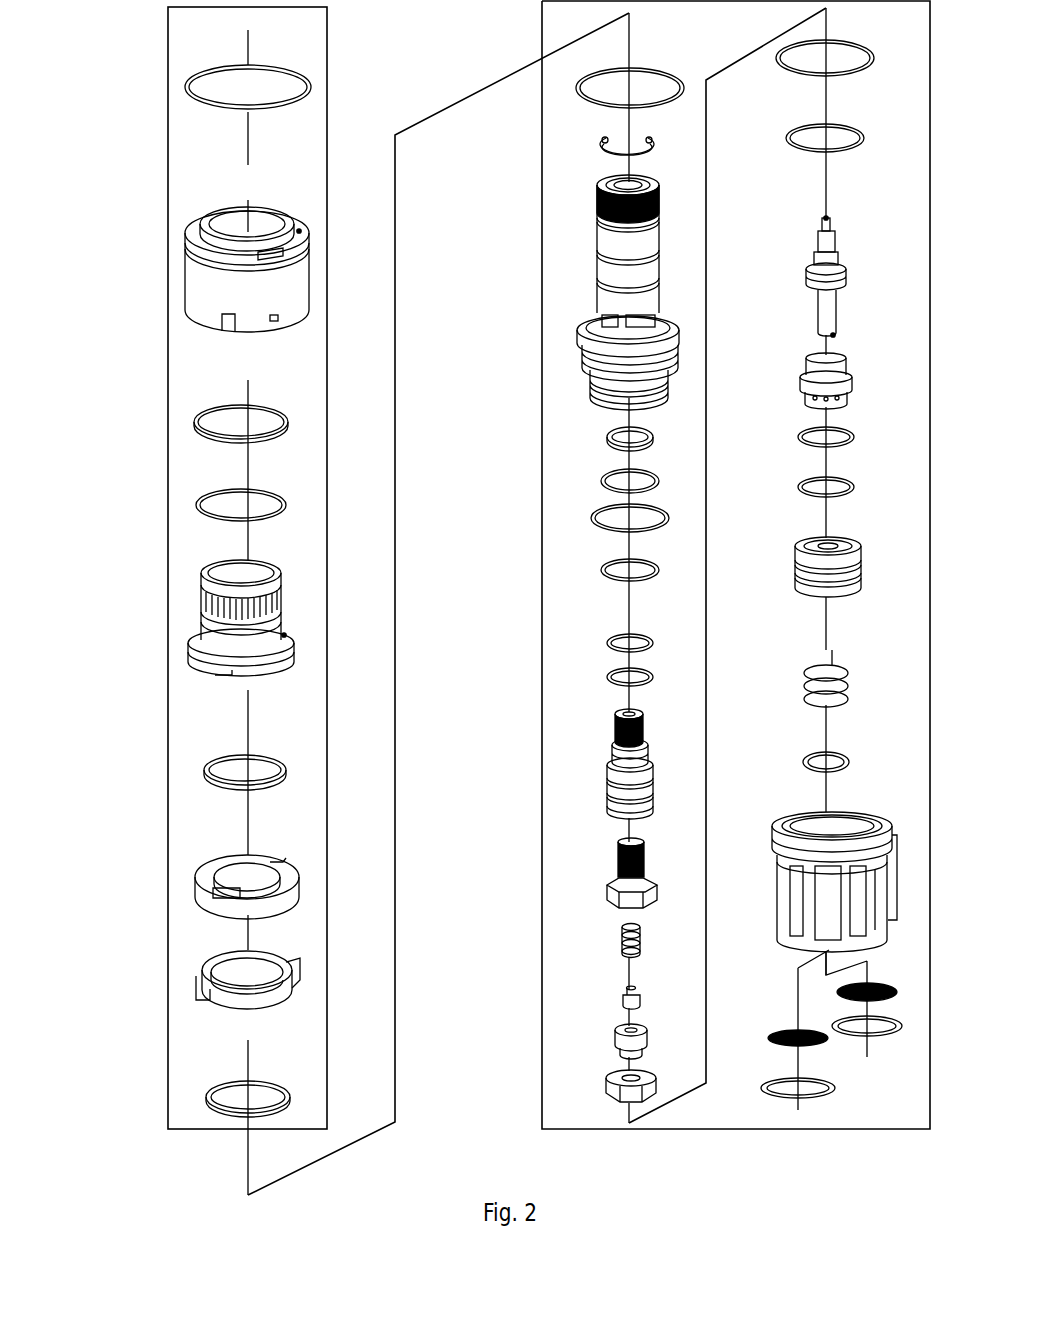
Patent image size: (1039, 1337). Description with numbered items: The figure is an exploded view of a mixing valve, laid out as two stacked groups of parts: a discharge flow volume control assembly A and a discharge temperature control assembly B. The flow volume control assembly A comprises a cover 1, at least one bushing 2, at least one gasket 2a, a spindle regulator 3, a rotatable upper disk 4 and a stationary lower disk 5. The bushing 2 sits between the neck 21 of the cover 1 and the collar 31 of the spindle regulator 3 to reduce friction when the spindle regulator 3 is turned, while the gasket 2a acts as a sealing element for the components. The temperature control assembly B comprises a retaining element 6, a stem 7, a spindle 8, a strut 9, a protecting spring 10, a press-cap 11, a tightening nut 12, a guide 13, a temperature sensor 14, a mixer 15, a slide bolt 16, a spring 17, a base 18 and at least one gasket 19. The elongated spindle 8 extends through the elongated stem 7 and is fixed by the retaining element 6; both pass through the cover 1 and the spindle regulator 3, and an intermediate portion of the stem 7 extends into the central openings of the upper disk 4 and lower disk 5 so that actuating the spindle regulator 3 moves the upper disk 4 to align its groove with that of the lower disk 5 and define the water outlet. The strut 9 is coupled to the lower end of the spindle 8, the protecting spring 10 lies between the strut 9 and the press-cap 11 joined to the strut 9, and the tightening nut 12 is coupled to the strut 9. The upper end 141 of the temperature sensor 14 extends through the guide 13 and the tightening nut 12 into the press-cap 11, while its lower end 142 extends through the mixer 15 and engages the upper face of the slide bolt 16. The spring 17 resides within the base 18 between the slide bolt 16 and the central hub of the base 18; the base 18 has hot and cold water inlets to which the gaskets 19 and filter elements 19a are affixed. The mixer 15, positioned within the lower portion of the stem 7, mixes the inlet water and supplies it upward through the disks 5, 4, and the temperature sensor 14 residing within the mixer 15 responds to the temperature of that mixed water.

The cover 1 is at (187, 275).
The neck 21 is at (301, 229).
The bushing 2 is at (196, 428).
The gasket 2a is at (206, 778).
The spindle regulator 3 is at (200, 620).
The collar 31 is at (285, 634).
The upper disk 4 is at (196, 890).
The lower disk 5 is at (200, 992).
The retaining element 6 is at (591, 150).
The stem 7 is at (578, 357).
The spindle 8 is at (606, 778).
The strut 9 is at (606, 890).
The protecting spring 10 is at (620, 938).
The press-cap 11 is at (621, 1005).
The tightening nut 12 is at (614, 1043).
The guide 13 is at (605, 1090).
The temperature sensor 14 is at (806, 288).
The upper end 141 is at (829, 219).
The lower end 142 is at (910, 358).
The mixer 15 is at (800, 397).
The slide bolt 16 is at (795, 571).
The spring 17 is at (805, 690).
The base 18 is at (790, 895).
The gasket 19 is at (853, 1094).
The filter element 19a is at (910, 987).
The discharge flow volume control assembly A is at (233, 1130).
The discharge temperature control assembly B is at (762, 1130).